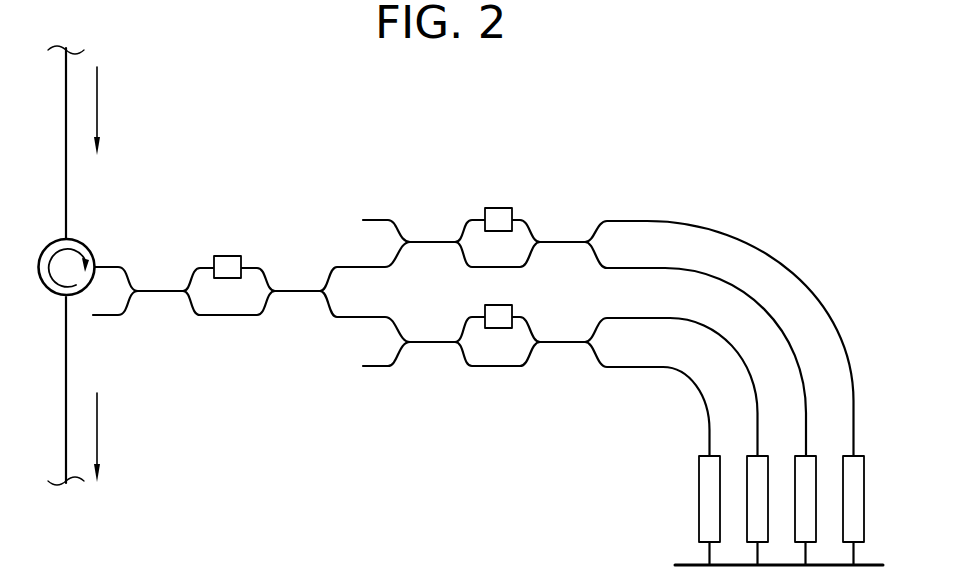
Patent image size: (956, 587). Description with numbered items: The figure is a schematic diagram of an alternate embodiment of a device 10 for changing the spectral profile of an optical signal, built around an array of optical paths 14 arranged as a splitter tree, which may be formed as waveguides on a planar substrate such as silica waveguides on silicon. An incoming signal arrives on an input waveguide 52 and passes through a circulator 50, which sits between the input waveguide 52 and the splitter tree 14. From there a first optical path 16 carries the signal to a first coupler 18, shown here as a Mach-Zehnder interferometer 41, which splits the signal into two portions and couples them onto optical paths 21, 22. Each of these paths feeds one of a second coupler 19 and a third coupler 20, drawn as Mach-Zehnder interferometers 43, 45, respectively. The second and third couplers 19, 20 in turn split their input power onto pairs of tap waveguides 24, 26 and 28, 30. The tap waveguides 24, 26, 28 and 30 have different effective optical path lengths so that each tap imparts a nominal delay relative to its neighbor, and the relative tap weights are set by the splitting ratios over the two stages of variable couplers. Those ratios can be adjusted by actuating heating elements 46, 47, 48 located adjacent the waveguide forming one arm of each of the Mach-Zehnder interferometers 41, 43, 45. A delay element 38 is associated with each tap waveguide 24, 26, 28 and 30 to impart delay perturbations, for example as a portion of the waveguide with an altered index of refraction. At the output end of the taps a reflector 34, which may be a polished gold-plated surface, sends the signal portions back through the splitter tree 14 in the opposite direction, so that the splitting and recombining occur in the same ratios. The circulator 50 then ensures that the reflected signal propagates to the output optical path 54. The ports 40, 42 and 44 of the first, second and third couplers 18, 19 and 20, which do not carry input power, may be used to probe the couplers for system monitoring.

The device 10 is at (364, 471).
The array of optical paths 14 is at (711, 175).
The first optical path 16 is at (118, 267).
The first coupler 18 is at (242, 232).
The second coupler 19 is at (466, 183).
The third coupler 20 is at (460, 300).
The optical path 21 is at (365, 265).
The optical path 22 is at (355, 318).
The tap waveguide 24 is at (663, 221).
The tap waveguide 26 is at (667, 268).
The tap waveguide 28 is at (660, 318).
The tap waveguide 30 is at (667, 367).
The reflector 34 is at (683, 563).
The delay element 38 is at (699, 484).
The port 40 is at (95, 316).
The Mach-Zehnder interferometer 41 is at (220, 316).
The port 42 is at (365, 220).
The Mach-Zehnder interferometer 43 is at (530, 218).
The port 44 is at (370, 366).
The Mach-Zehnder interferometer 45 is at (475, 366).
The heating element 46 is at (238, 279).
The heating element 47 is at (497, 208).
The heating element 48 is at (500, 305).
The circulator 50 is at (44, 243).
The input waveguide 52 is at (68, 185).
The output optical path 54 is at (66, 392).